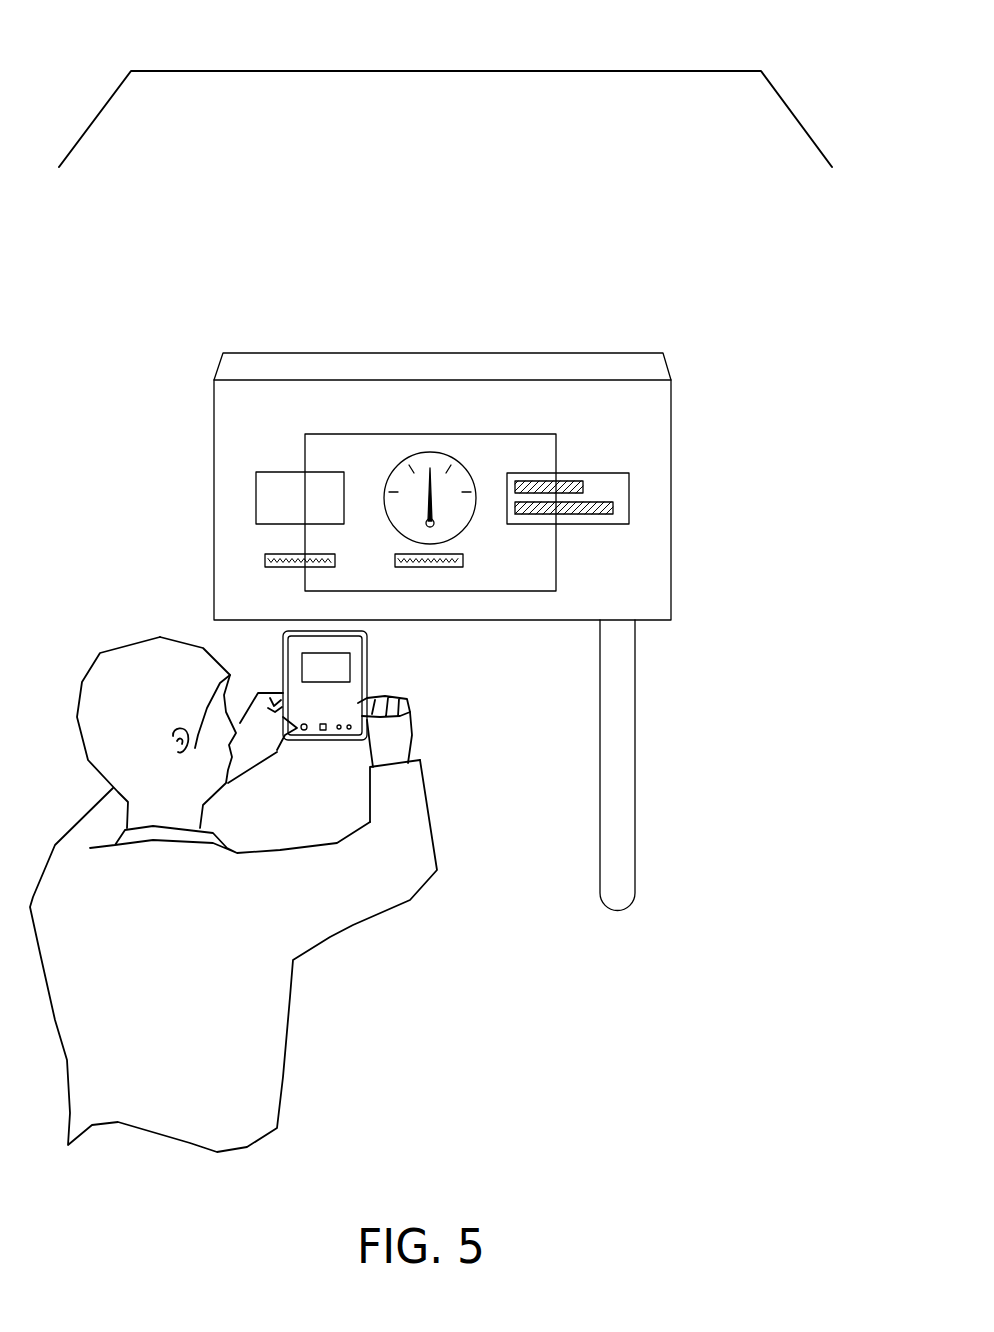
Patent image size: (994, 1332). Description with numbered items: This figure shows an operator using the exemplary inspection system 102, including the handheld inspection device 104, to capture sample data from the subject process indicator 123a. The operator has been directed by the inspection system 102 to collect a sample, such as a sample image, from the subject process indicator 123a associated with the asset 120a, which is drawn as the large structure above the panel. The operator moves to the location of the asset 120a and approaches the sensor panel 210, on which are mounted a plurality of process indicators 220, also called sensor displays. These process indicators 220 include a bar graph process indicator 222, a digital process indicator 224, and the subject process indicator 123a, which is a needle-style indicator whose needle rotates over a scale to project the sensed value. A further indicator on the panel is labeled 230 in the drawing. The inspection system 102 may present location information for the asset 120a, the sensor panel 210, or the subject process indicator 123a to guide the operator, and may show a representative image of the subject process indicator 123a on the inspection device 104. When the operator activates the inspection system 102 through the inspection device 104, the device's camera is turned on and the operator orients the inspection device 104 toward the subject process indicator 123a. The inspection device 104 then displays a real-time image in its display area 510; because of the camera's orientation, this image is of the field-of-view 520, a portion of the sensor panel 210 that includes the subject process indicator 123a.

The asset 120a is at (582, 71).
The sensor panel 210 is at (671, 423).
The bar graph process indicator 222 is at (570, 537).
The process indicators 220 is at (370, 414).
The digital process indicator 224 is at (252, 492).
The bar graph indicator 230 is at (557, 447).
The subject process indicator 123a is at (444, 572).
The inspection system 102 is at (464, 760).
The inspection device 104 is at (349, 711).
The field-of-view 520 is at (305, 663).
The display area 510 is at (323, 703).